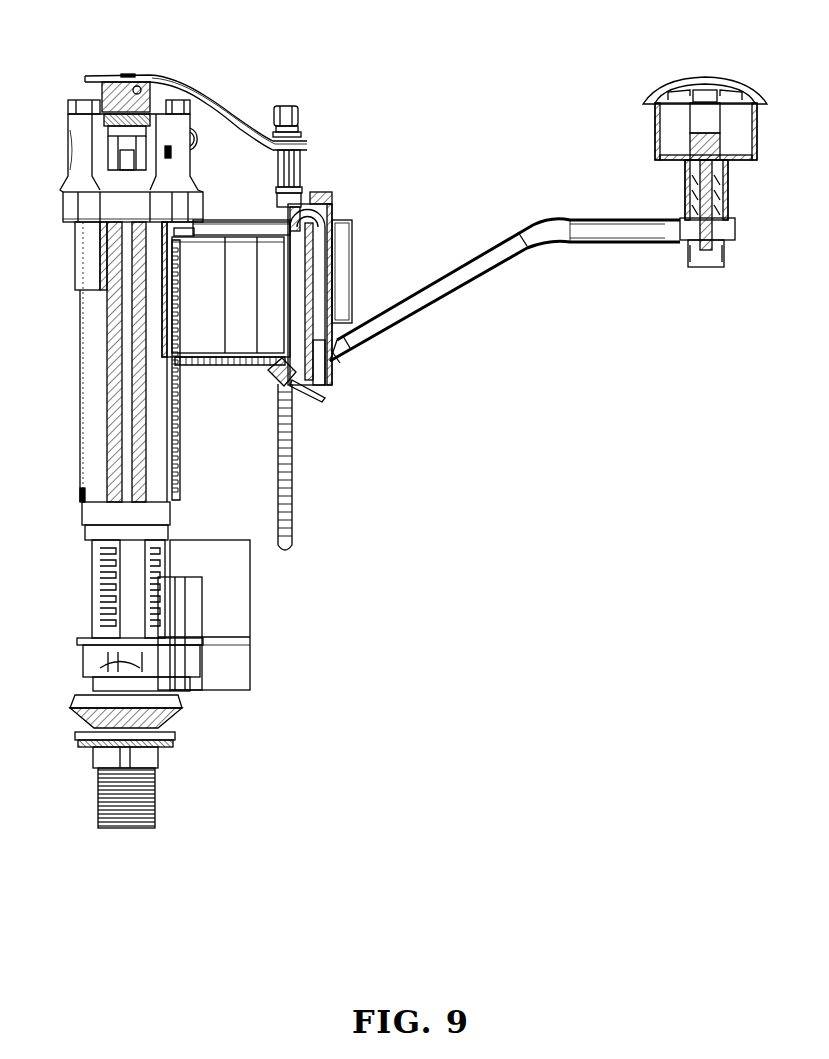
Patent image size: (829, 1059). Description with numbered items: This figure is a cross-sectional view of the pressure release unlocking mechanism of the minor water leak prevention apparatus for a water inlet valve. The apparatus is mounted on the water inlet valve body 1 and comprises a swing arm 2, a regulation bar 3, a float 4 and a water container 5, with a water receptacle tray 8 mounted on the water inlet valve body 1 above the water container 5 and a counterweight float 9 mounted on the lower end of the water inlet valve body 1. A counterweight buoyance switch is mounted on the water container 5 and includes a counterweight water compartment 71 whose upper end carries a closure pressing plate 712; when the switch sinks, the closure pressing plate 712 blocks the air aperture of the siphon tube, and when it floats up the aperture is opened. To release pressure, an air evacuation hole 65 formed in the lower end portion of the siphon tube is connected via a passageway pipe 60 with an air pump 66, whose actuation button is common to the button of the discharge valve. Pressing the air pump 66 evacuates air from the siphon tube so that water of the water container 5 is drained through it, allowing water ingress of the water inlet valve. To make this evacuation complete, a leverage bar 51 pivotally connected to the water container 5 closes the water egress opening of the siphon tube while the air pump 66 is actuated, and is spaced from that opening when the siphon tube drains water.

The water inlet valve body 1 is at (98, 446).
The swing arm 2 is at (208, 100).
The regulation bar 3 is at (288, 105).
The float 4 is at (253, 230).
The water container 5 is at (216, 218).
The water receptacle tray 8 is at (72, 210).
The counterweight float 9 is at (250, 633).
The leverage bar 51 is at (323, 393).
The passageway pipe 60 is at (500, 256).
The air evacuation hole 65 is at (346, 348).
The air pump 66 is at (652, 121).
The counterweight water compartment 71 is at (352, 240).
The closure pressing plate 712 is at (332, 195).